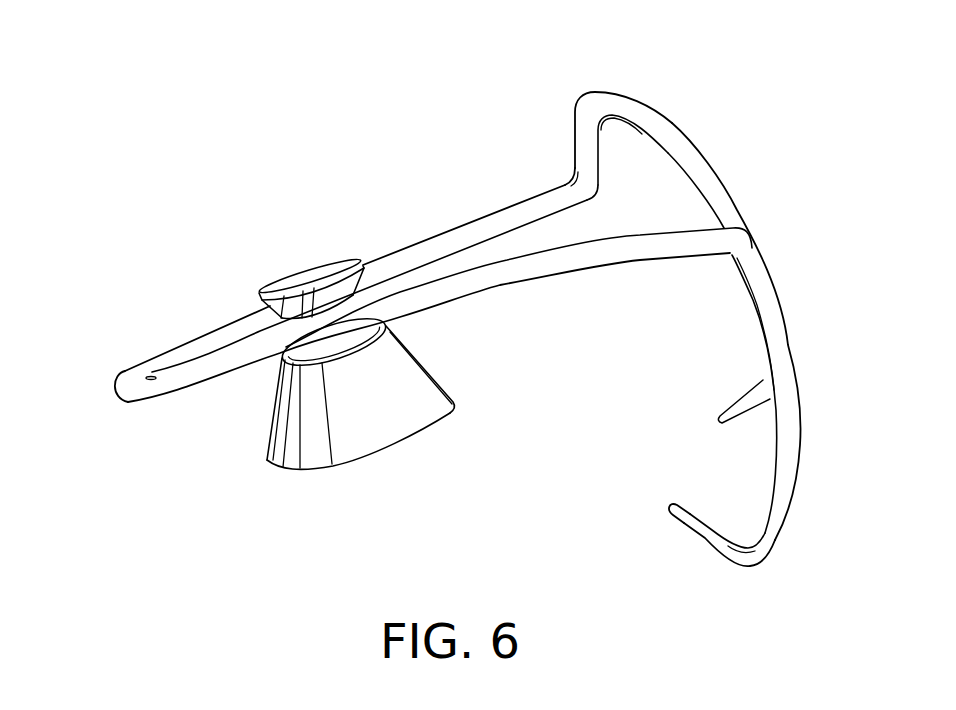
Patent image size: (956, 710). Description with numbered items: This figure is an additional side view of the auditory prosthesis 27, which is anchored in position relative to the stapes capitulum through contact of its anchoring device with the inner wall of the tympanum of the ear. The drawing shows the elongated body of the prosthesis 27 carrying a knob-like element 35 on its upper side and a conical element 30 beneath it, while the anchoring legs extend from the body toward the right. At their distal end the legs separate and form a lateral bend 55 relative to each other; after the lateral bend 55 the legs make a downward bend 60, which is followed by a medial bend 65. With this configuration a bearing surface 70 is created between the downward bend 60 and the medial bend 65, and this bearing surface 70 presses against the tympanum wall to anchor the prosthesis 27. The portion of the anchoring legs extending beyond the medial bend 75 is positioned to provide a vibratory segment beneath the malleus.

The auditory prosthesis 27 is at (148, 308).
The conical base member 30 is at (444, 386).
The knob 35 is at (312, 266).
The lateral bend 55 is at (569, 182).
The downward bend 60 is at (600, 90).
The medial bend 65 is at (753, 567).
The bearing surface 70 is at (670, 110).
The portion of the anchoring legs extending beyond the medial bend 75 is at (672, 505).